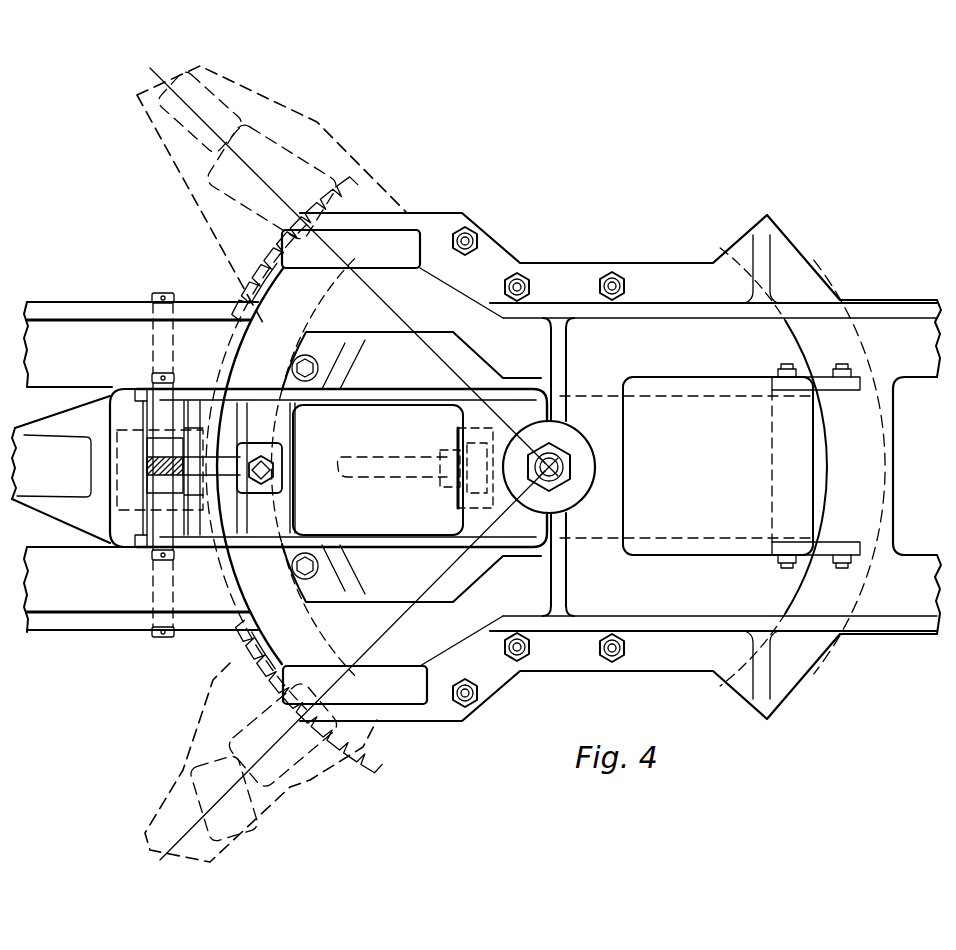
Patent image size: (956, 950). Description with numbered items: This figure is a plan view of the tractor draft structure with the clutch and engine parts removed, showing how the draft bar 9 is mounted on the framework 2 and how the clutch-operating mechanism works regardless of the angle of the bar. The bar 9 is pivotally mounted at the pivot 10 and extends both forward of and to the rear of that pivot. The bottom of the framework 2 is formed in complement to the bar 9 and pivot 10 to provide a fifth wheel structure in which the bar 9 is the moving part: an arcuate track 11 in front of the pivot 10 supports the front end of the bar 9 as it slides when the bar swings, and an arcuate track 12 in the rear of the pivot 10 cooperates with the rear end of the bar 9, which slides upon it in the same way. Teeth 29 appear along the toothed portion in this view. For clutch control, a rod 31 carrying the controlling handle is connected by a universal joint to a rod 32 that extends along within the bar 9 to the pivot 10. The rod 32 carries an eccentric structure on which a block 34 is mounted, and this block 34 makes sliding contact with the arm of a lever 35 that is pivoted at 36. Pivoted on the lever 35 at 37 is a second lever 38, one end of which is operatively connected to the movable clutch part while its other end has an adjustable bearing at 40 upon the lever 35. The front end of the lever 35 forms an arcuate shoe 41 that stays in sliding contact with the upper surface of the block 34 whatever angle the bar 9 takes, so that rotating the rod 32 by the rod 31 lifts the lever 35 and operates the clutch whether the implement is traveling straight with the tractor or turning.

The framework 2 is at (97, 597).
The bar 9 is at (53, 500).
The pivot 10 is at (562, 467).
The arcuate track 11 is at (823, 337).
The arcuate track 12 is at (280, 620).
The gear teeth 29 is at (347, 727).
The rod 31 is at (180, 155).
The rod 32 is at (403, 470).
The block 34 is at (457, 435).
The lever 35 is at (362, 395).
The pivot 36 is at (153, 333).
The pivot 37 is at (150, 377).
The second lever 38 is at (147, 465).
The adjustable bearing 40 is at (282, 485).
The arcuate shoe 41 is at (473, 522).